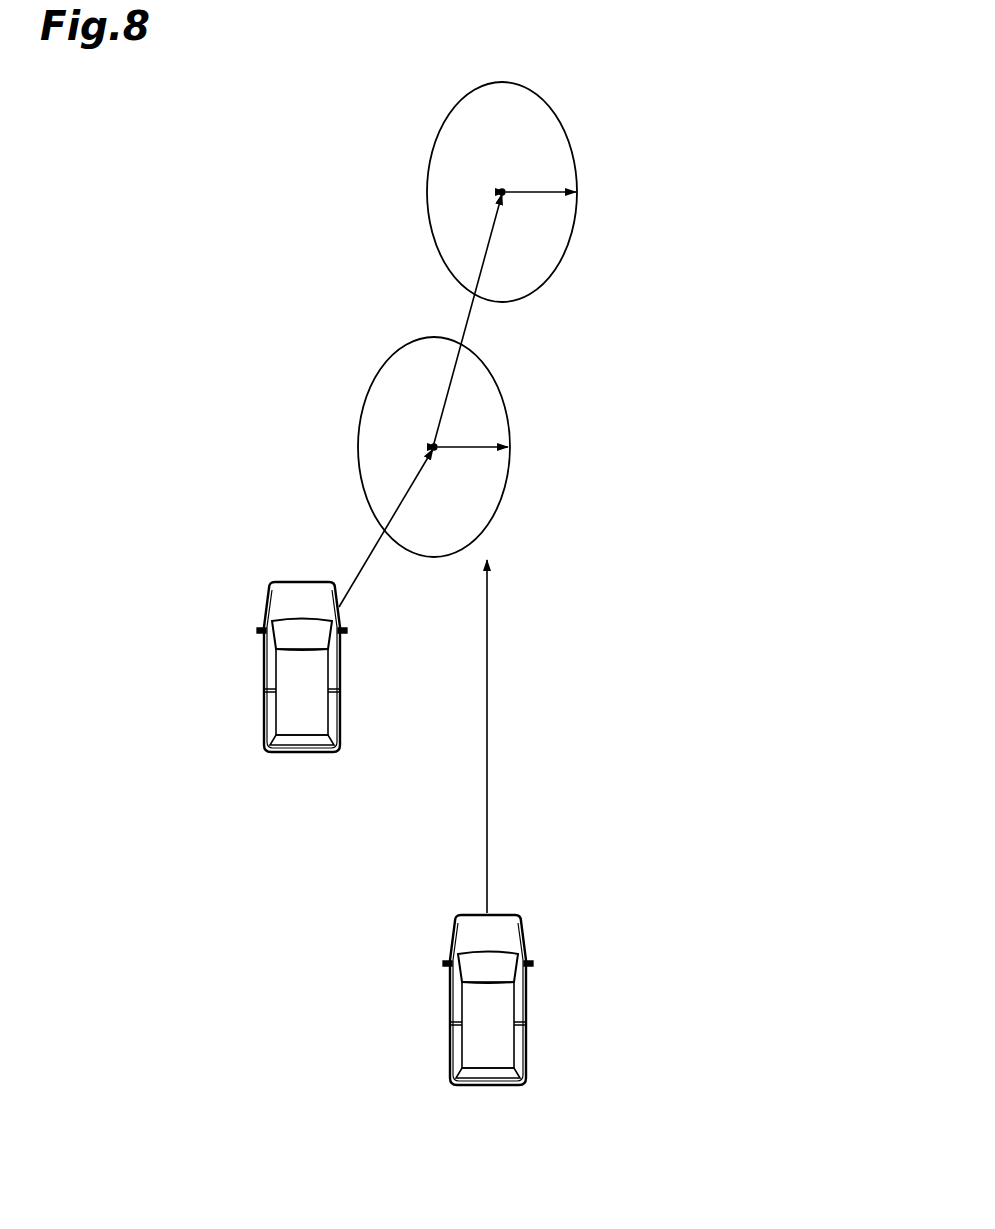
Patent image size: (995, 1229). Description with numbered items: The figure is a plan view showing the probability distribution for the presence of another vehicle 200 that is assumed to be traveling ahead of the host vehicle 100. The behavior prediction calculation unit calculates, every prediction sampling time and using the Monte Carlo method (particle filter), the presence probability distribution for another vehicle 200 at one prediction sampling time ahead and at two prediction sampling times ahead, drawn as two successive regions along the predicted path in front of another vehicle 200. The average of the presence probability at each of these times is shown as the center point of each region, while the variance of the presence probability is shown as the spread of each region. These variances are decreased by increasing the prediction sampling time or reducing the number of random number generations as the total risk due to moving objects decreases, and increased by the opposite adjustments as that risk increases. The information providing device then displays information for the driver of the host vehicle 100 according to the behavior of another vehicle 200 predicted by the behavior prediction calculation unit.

The host vehicle 100 is at (526, 1040).
The another vehicle 200 is at (266, 705).